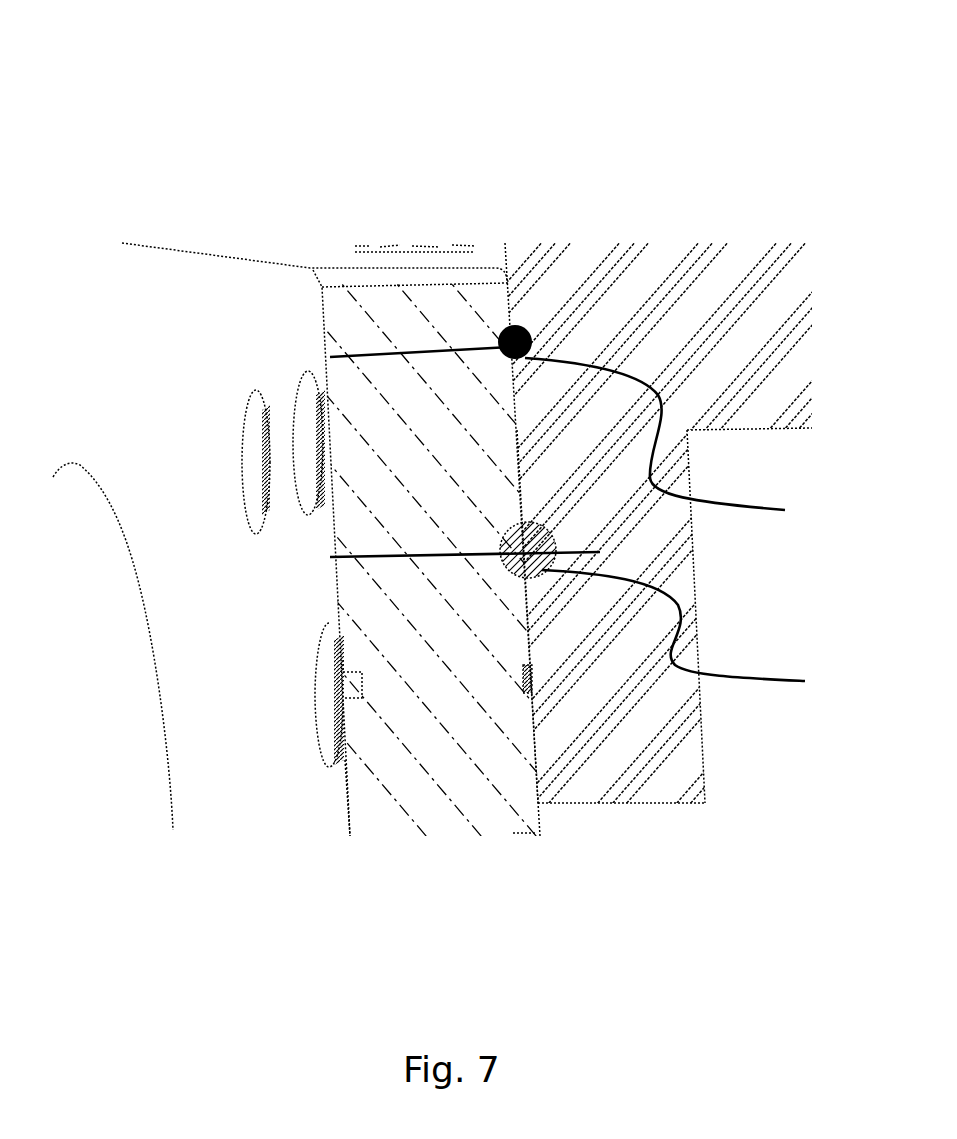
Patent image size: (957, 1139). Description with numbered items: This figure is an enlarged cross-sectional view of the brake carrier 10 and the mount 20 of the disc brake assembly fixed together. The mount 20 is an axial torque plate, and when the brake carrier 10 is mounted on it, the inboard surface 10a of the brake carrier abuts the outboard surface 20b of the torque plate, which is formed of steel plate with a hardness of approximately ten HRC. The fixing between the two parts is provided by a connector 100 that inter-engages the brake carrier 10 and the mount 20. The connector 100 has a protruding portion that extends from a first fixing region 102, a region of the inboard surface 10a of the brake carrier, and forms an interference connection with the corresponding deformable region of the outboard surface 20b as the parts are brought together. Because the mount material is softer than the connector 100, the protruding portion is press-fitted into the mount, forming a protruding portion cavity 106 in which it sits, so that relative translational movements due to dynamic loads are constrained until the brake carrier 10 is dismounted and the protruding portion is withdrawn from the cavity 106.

The brake carrier 10 is at (747, 244).
The inboard surface of the brake carrier 10a is at (537, 723).
The mount 20 is at (462, 265).
The outboard surface of the mount 20b is at (540, 767).
The connector 100 is at (687, 527).
The first fixing region 102 is at (533, 342).
The protruding portion cavity 106 is at (330, 357).